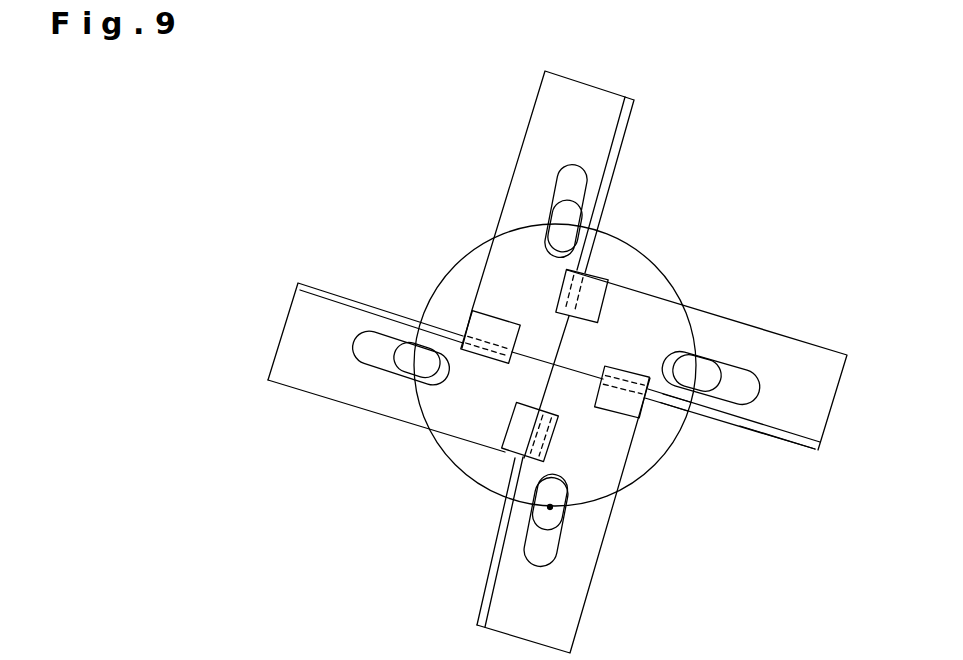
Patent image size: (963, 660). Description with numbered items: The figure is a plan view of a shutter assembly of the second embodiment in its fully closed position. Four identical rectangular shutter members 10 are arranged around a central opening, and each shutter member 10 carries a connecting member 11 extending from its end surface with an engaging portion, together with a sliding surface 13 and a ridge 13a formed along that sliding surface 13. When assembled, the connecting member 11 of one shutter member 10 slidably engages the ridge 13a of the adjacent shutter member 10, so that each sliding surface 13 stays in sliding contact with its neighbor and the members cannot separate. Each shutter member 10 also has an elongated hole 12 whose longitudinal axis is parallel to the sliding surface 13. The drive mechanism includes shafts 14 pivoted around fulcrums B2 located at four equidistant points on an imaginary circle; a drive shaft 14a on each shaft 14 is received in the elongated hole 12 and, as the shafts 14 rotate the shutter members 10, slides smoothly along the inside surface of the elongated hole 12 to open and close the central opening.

The shutter member 10 is at (767, 336).
The connecting member 11 is at (623, 407).
The elongated hole 12 is at (745, 388).
The sliding surface 13 is at (690, 428).
The ridge 13a is at (786, 434).
The shaft 14 is at (703, 370).
The drive shaft 14a is at (690, 428).
The fulcrum B2 is at (550, 507).